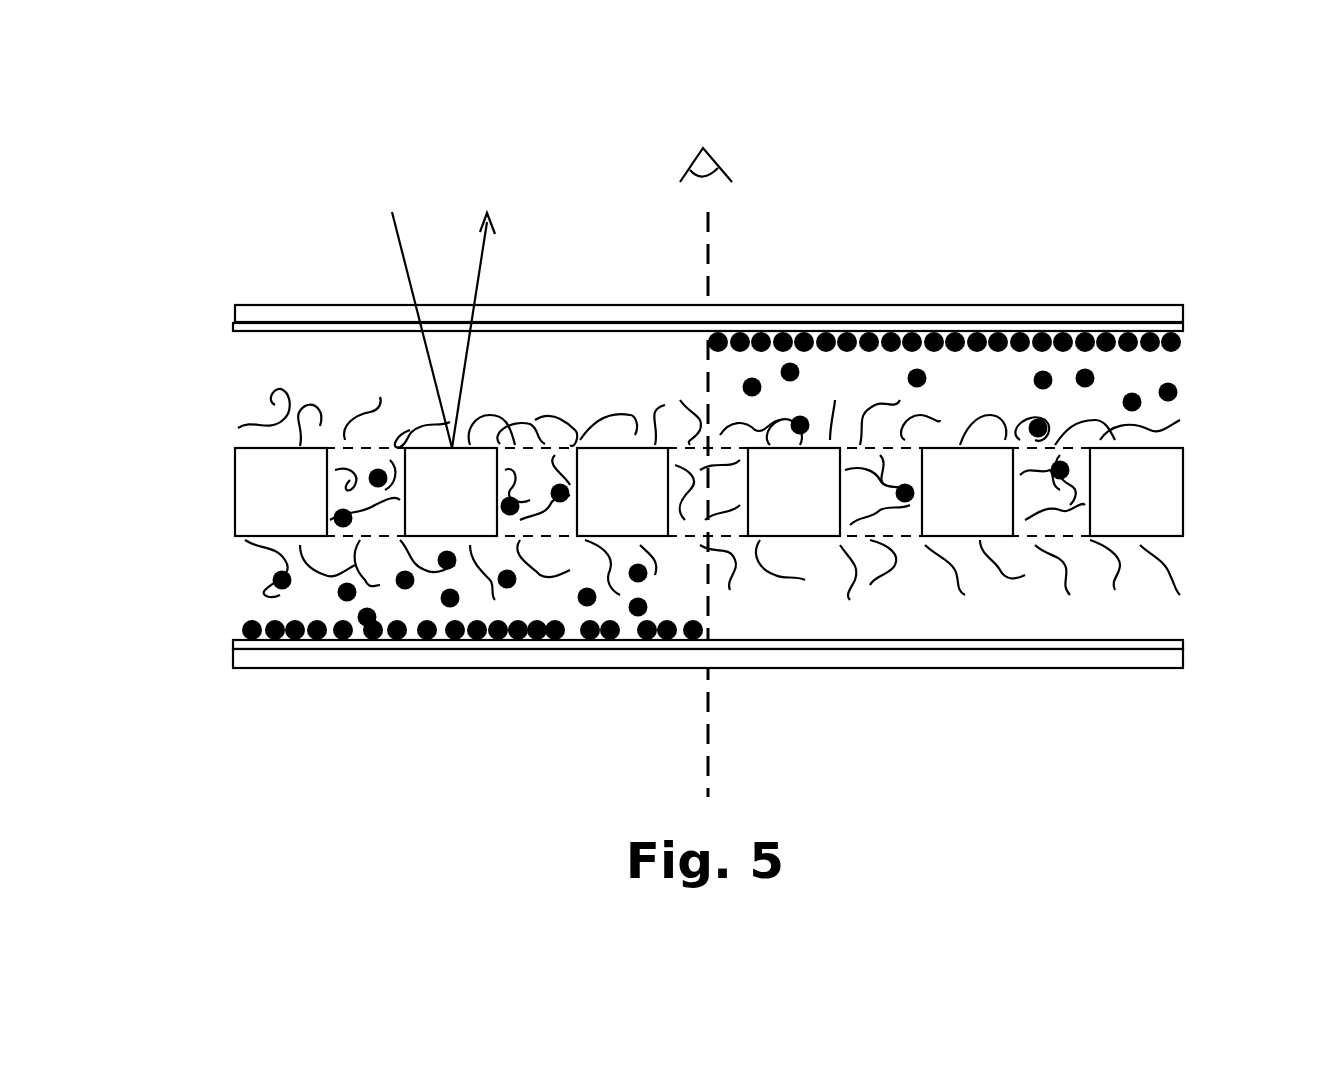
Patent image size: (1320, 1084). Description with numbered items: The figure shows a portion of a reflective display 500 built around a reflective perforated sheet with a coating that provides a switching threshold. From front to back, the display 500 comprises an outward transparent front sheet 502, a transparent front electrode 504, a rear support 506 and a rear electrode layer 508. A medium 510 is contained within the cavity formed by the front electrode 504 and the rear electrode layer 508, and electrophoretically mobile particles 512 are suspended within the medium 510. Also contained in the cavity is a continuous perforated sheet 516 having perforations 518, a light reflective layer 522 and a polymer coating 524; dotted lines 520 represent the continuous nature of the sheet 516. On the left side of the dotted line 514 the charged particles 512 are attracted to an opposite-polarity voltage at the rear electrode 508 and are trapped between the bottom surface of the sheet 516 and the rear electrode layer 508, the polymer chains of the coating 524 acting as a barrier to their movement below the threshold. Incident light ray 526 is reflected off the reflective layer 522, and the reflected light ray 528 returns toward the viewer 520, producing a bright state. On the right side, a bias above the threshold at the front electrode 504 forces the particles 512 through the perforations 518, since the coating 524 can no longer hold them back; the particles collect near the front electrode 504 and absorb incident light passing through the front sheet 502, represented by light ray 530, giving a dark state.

The display 500 is at (1066, 256).
The transparent front sheet 502 is at (275, 305).
The transparent front electrode 504 is at (271, 331).
The rear support 506 is at (913, 668).
The rear electrode layer 508 is at (1155, 640).
The medium 510 is at (368, 391).
The electrophoretically mobile particles 512 is at (270, 620).
The dotted line 514 is at (710, 270).
The continuous perforated sheet 516 is at (254, 511).
The perforations 518 is at (857, 428).
The dotted lines / viewer 520 is at (718, 169).
The light reflective layer 522 is at (1170, 447).
The coating 524 is at (670, 408).
The light ray 526 is at (402, 257).
The reflected light ray 528 is at (482, 284).
The light ray 530 is at (957, 322).